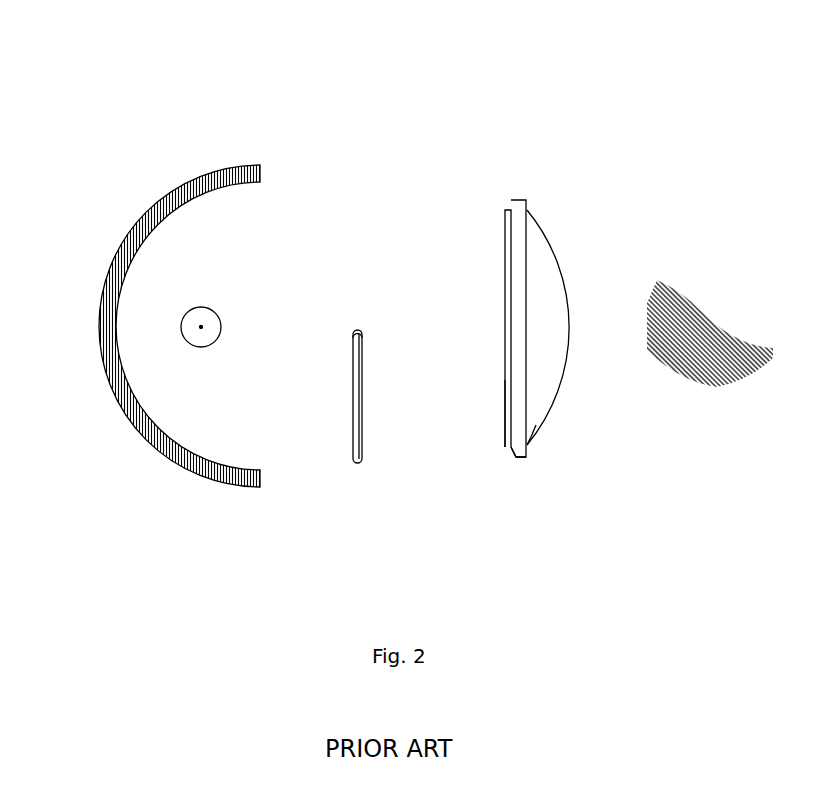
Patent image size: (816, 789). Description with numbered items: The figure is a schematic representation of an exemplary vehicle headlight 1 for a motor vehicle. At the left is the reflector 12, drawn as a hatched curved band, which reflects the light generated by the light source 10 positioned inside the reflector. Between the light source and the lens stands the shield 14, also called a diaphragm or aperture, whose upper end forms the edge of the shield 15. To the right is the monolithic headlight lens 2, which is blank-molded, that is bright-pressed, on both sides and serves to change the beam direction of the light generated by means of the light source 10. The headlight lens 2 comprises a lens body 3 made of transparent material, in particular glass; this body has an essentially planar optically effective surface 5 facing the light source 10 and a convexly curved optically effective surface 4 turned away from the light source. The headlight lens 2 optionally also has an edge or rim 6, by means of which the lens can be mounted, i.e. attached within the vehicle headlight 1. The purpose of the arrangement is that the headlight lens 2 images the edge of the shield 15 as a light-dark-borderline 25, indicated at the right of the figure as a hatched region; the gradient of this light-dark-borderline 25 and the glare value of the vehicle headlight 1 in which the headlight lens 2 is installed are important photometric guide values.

The vehicle headlight 1 is at (490, 103).
The headlight lens 2 is at (527, 202).
The lens body 3 is at (542, 388).
The convexly curved optically effective surface 4 is at (537, 433).
The planar optically effective surface 5 is at (505, 415).
The edge or rim 6 is at (518, 438).
The light source 10 is at (201, 327).
The reflector 12 is at (187, 188).
The shield 14 is at (358, 435).
The edge of the shield 15 is at (357, 330).
The light-dark-borderline 25 is at (695, 308).